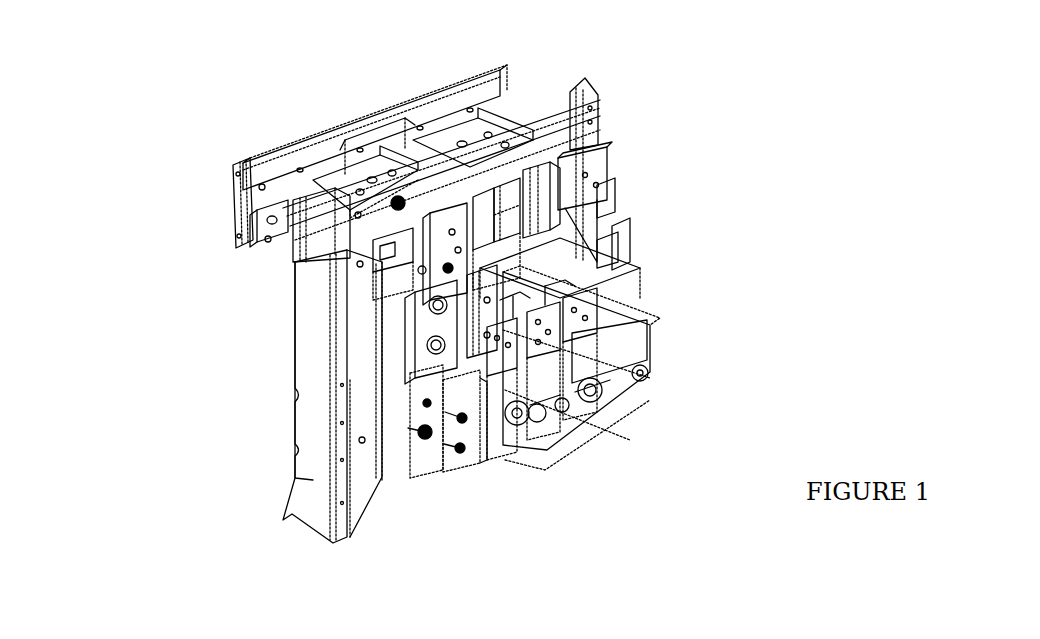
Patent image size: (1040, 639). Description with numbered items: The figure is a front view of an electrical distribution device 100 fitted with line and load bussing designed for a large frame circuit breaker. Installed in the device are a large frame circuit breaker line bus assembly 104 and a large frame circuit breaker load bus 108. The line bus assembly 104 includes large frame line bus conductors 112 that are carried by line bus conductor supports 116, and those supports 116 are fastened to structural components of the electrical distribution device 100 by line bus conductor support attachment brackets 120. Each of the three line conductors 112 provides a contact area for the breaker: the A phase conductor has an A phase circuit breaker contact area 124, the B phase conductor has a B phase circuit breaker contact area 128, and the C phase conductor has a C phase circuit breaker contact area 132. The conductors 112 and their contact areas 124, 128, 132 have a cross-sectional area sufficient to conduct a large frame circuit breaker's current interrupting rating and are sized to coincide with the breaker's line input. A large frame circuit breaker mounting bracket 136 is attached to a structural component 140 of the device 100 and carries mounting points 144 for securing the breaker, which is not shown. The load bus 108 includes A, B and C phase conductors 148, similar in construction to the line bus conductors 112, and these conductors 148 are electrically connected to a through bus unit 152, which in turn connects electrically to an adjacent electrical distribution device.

The electrical distribution device 100 is at (183, 113).
The large frame circuit breaker line bus assembly 104 is at (376, 92).
The large frame circuit breaker load bus 108 is at (622, 279).
The large frame line bus conductors 112 is at (389, 149).
The line bus conductor supports 116 is at (356, 220).
The line bus conductor support attachment brackets 120 is at (307, 206).
The A phase circuit breaker contact area 124 is at (509, 200).
The B phase circuit breaker contact area 128 is at (549, 180).
The C phase circuit breaker contact area 132 is at (595, 170).
The large frame circuit breaker mounting bracket 136 is at (618, 242).
The structural component 140 is at (394, 359).
The mounting points 144 is at (601, 251).
The A, B and C phase conductors 148 is at (576, 337).
The through bus unit 152 is at (621, 359).